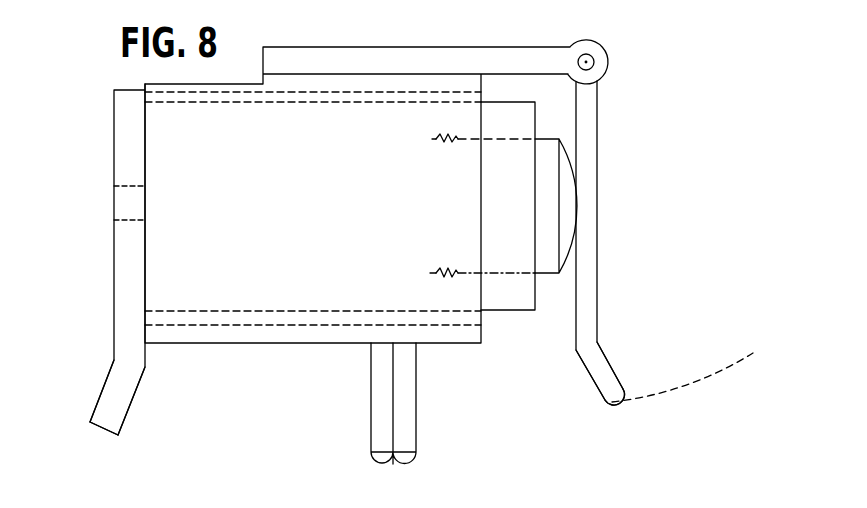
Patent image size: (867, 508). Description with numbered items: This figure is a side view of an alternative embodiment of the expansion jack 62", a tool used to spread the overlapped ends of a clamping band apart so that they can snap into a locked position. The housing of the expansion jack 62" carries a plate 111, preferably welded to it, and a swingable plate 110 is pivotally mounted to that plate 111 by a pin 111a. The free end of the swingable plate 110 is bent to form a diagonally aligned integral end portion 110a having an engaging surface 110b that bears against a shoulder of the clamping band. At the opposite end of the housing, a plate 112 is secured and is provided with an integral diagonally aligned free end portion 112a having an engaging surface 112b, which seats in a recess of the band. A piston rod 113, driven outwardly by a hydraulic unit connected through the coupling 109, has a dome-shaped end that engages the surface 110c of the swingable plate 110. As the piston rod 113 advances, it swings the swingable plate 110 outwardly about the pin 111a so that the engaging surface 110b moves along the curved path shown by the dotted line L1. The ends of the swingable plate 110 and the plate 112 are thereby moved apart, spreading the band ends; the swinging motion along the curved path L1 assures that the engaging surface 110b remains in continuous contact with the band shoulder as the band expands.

The expansion jack 62 is at (307, 176).
The coupling 109 is at (382, 392).
The swingable plate 110 is at (588, 160).
The integral end portion 110a is at (597, 362).
The engaging surface 110b is at (615, 388).
The surface of plate 110 110c is at (576, 332).
The plate 111 is at (520, 60).
The pin 111a is at (594, 61).
The plate 112 is at (120, 152).
The free end portion 112a is at (120, 377).
The engaging surface 112b is at (95, 415).
The piston rod 113 is at (565, 205).
The curved path L1 is at (725, 370).